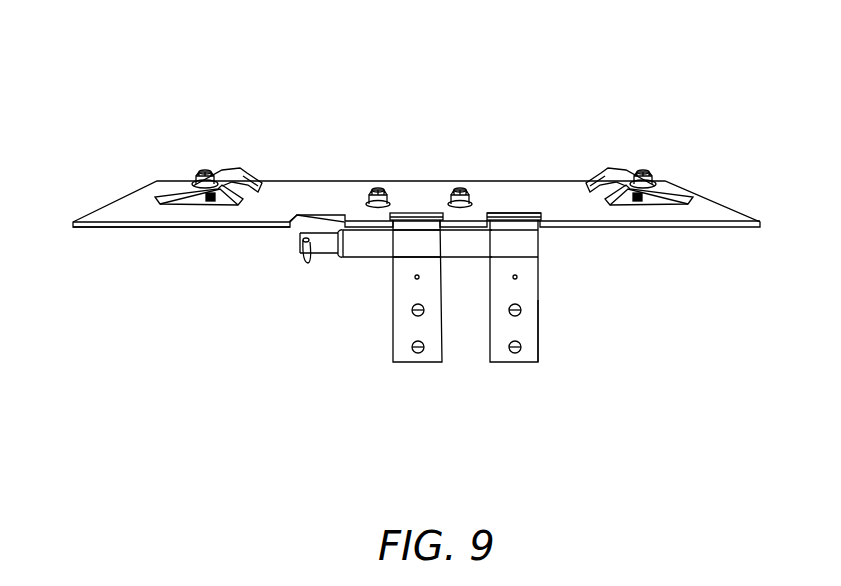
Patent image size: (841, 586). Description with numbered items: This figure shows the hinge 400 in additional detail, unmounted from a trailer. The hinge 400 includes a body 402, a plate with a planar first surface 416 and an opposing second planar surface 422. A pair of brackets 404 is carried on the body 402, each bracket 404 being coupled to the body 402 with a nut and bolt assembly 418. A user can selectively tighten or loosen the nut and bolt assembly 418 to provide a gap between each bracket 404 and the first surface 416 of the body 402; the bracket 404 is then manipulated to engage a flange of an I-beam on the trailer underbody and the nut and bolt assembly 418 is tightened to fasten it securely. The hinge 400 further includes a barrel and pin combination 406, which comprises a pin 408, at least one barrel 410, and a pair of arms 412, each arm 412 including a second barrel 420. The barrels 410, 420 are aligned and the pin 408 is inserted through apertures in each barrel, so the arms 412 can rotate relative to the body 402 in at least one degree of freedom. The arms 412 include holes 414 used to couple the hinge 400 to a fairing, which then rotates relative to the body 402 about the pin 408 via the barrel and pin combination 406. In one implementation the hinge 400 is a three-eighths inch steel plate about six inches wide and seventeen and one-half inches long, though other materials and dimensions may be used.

The hinge 400 is at (170, 80).
The body 402 is at (324, 190).
The brackets 404 is at (253, 170).
The barrel and pin combination 406 is at (435, 328).
The pin 408 is at (330, 240).
The barrel 410 is at (473, 243).
The arms 412 is at (434, 352).
The holes 414 is at (536, 354).
The first surface 416 is at (417, 192).
The nut and bolt assembly 418 is at (200, 172).
The second barrel 420 is at (528, 237).
The second surface 422 is at (148, 255).